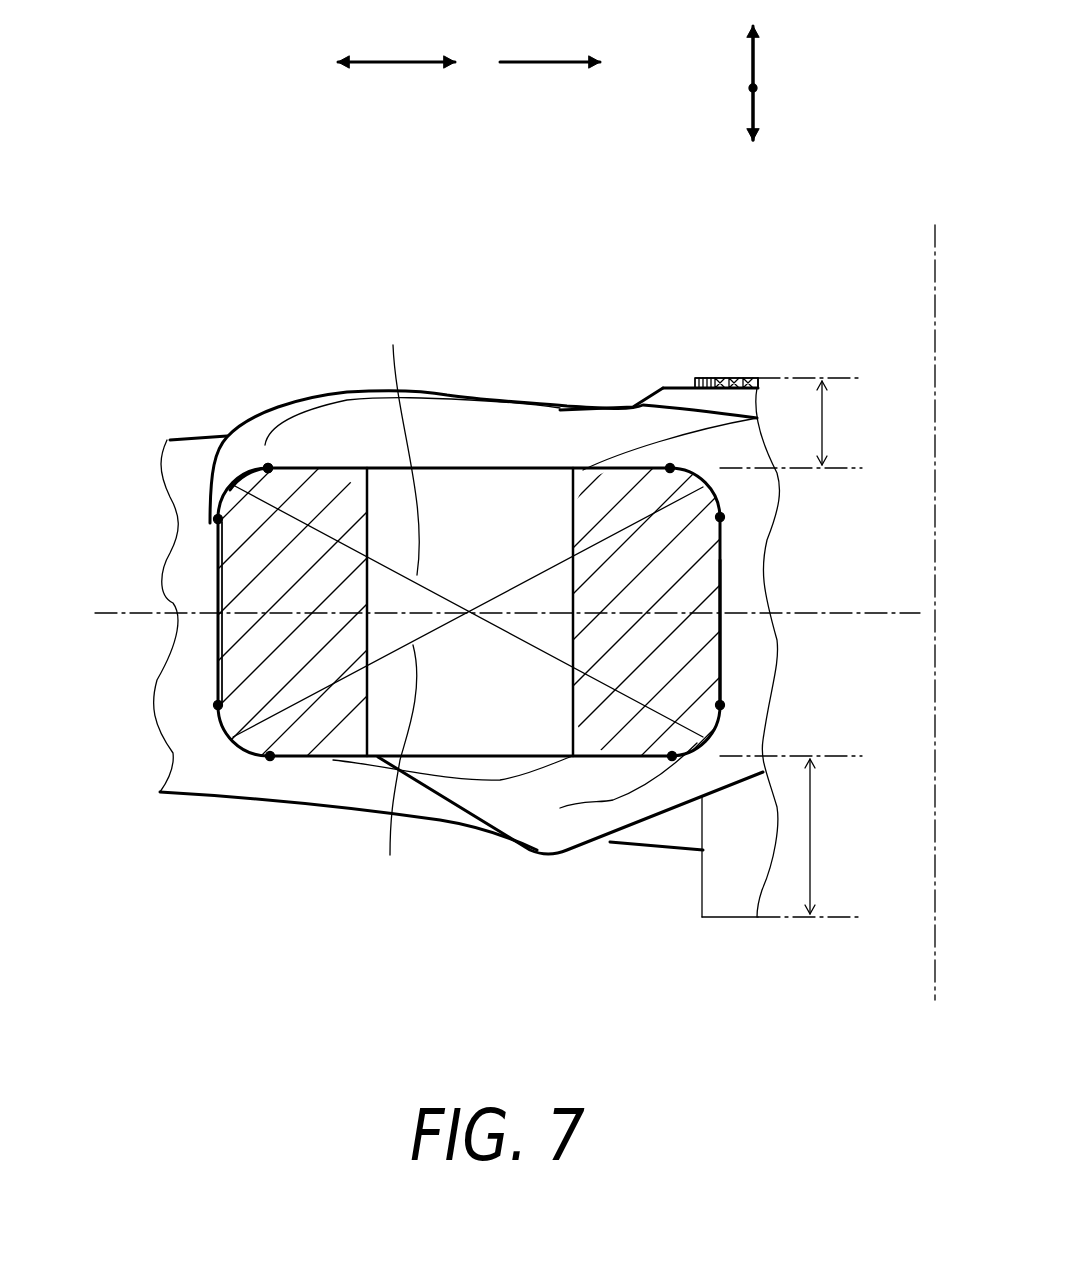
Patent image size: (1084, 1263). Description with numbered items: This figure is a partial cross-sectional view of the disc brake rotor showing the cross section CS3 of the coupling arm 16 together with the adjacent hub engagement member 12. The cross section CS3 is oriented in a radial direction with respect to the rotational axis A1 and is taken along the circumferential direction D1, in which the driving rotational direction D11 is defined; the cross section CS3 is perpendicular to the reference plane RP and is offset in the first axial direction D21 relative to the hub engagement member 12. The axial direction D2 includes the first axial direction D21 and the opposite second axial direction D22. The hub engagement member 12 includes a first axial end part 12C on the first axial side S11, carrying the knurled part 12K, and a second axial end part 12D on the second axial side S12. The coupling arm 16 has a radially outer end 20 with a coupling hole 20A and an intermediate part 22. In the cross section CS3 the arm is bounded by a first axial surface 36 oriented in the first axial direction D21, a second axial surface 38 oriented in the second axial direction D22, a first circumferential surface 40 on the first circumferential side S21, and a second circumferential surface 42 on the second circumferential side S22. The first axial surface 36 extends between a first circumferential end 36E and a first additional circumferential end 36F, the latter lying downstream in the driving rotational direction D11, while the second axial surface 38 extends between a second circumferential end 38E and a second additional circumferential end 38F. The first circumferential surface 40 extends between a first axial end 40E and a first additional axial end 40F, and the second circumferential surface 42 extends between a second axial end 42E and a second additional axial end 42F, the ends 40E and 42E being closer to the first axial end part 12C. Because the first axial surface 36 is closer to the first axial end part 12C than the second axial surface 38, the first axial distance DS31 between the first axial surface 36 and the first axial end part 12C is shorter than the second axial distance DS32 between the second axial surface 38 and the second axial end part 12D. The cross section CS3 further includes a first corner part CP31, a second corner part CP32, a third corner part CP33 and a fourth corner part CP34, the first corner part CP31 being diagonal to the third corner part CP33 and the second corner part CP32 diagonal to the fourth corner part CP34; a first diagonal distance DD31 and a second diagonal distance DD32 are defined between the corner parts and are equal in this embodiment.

The circumferential direction D1 is at (410, 62).
The driving rotational direction D11 is at (557, 62).
The axial direction D2 is at (843, 57).
The first axial direction D21 is at (753, 62).
The second axial direction D22 is at (753, 110).
The coupling arm 16 is at (459, 366).
The hub engagement member 12 is at (713, 364).
The first axial end part 12C is at (740, 377).
The knurled part 12K is at (758, 372).
The second axial end part 12D is at (733, 920).
The first axial side S11 is at (660, 366).
The second axial side S12 is at (615, 870).
The first circumferential side S21 is at (205, 665).
The second circumferential side S22 is at (724, 660).
The first axial surface 36 is at (305, 464).
The first circumferential end 36E is at (232, 482).
The first additional circumferential end 36F is at (670, 465).
The second axial surface 38 is at (338, 760).
The second circumferential end 38E is at (272, 758).
The second additional circumferential end 38F is at (687, 757).
The first circumferential surface 40 is at (213, 547).
The first axial end 40E is at (215, 519).
The first additional axial end 40F is at (218, 704).
The second circumferential surface 42 is at (722, 585).
The second axial end 42E is at (722, 517).
The second additional axial end 42F is at (722, 704).
The first corner part CP31 is at (231, 474).
The second corner part CP32 is at (714, 486).
The third corner part CP33 is at (714, 734).
The fourth corner part CP34 is at (242, 751).
The cross section CS3 is at (268, 465).
The radially outer end 20 is at (560, 808).
The coupling hole 20A is at (573, 517).
The intermediate part 22 is at (513, 807).
The first diagonal distance DD31 is at (390, 442).
The second diagonal distance DD32 is at (390, 767).
The first axial distance DS31 is at (822, 417).
The second axial distance DS32 is at (812, 837).
The reference plane RP is at (117, 613).
The rotational axis A1 is at (935, 933).